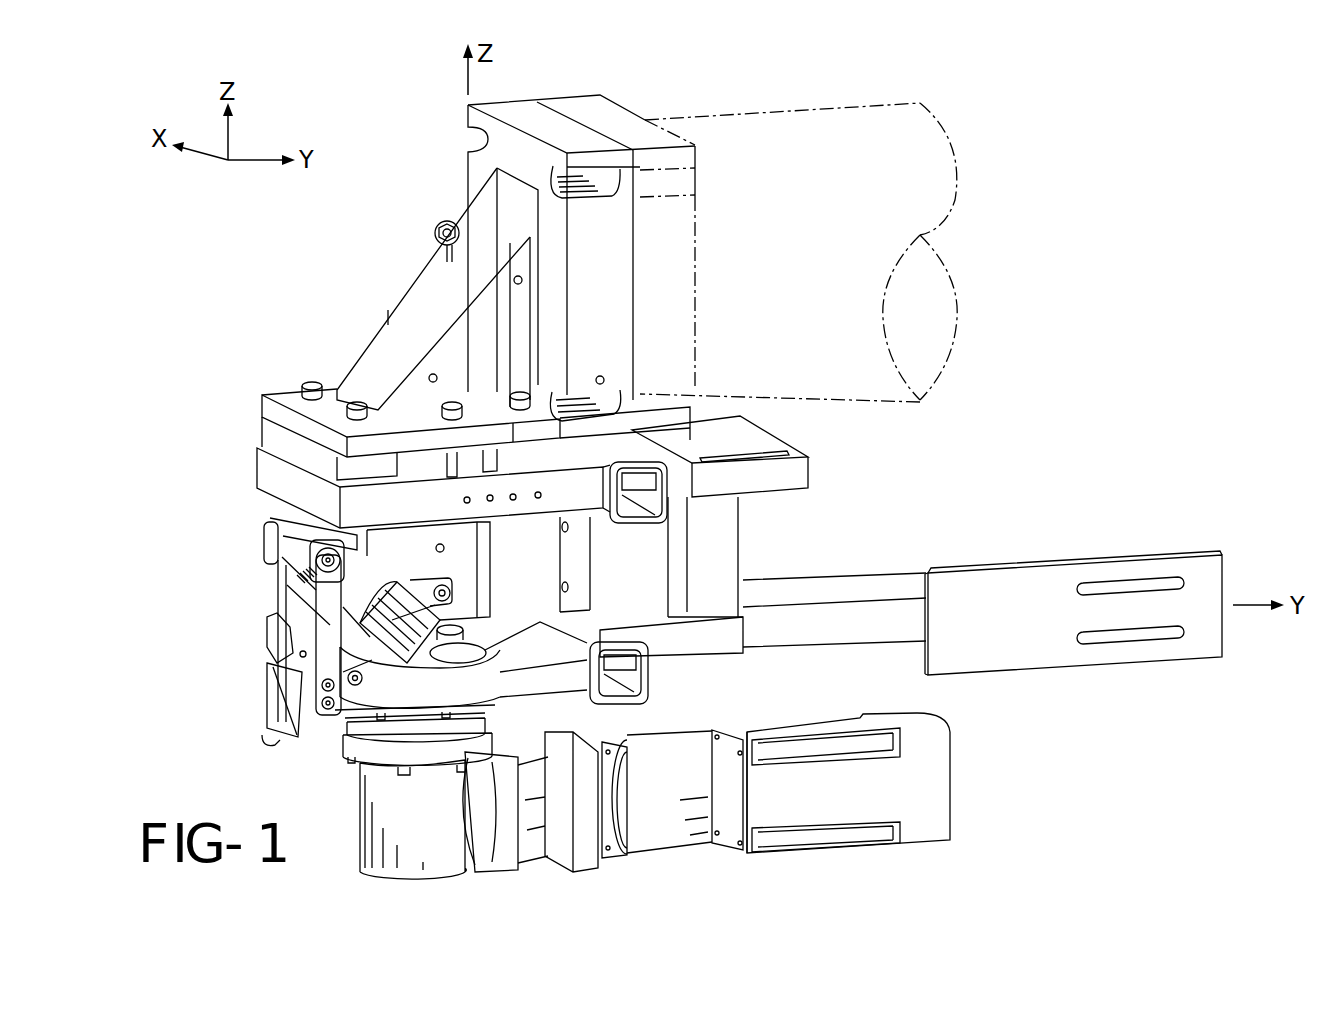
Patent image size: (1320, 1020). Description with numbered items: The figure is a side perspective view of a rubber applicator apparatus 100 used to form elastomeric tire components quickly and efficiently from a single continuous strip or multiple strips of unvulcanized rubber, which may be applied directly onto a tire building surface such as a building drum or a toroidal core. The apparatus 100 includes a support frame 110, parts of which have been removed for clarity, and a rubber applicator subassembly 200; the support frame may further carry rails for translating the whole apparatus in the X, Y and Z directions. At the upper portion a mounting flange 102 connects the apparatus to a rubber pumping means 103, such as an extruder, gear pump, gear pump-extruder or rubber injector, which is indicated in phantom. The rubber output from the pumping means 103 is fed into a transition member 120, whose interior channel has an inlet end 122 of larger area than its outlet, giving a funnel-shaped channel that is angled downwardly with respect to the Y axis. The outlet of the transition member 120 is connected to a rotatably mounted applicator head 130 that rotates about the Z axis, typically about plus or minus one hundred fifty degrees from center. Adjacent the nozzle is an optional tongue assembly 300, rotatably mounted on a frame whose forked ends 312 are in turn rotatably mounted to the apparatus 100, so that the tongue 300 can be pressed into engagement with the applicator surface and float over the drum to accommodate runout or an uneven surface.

The rubber applicator apparatus 100 is at (148, 338).
The mounting flange 102 is at (582, 242).
The rubber pumping means 103 is at (900, 187).
The support frame 110 is at (287, 479).
The transition member 120 is at (412, 317).
The inlet end 122 is at (645, 232).
The applicator head 130 is at (397, 557).
The rubber applicator subassembly 200 is at (228, 537).
The tongue assembly 300 is at (270, 714).
The forked ends 312 is at (283, 575).